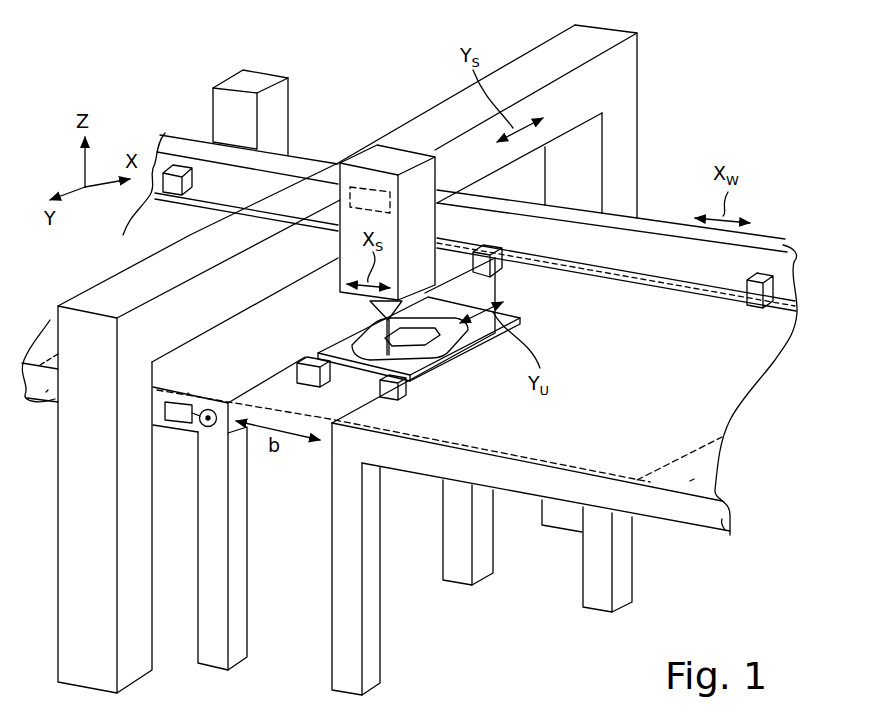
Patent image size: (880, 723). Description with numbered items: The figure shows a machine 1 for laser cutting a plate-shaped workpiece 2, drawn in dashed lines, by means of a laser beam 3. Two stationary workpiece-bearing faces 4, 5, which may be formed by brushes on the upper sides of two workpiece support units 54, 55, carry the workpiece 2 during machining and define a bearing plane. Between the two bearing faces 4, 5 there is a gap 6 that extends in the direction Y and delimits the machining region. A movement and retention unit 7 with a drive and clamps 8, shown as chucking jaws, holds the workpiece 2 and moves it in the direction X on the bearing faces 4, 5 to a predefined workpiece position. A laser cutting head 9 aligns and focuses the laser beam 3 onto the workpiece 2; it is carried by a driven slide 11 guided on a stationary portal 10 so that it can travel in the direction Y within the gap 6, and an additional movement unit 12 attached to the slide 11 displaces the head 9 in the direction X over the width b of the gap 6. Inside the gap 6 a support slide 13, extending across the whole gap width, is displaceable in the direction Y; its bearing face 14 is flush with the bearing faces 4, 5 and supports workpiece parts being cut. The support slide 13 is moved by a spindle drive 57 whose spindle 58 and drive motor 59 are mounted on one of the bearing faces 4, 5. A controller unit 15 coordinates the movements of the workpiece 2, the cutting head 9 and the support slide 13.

The machine 1 is at (742, 123).
The plate-shaped workpiece 2 is at (520, 462).
The laser beam 3 is at (383, 327).
The workpiece-bearing face 4 is at (47, 352).
The workpiece-bearing face 5 is at (697, 480).
The gap 6 is at (528, 303).
The movement and retention unit 7 is at (662, 263).
The clamps 8 is at (767, 296).
The laser cutting head 9 is at (370, 305).
The stationary portal 10 is at (138, 658).
The driven slide 11 is at (368, 178).
The additional movement unit 12 is at (352, 193).
The support slide 13 is at (383, 410).
The bearing face 14 is at (372, 340).
The controller unit 15 is at (232, 115).
The workpiece support unit 54 is at (47, 392).
The workpiece support unit 55 is at (730, 535).
The spindle drive 57 is at (188, 394).
The spindle 58 is at (238, 424).
The drive motor 59 is at (178, 423).